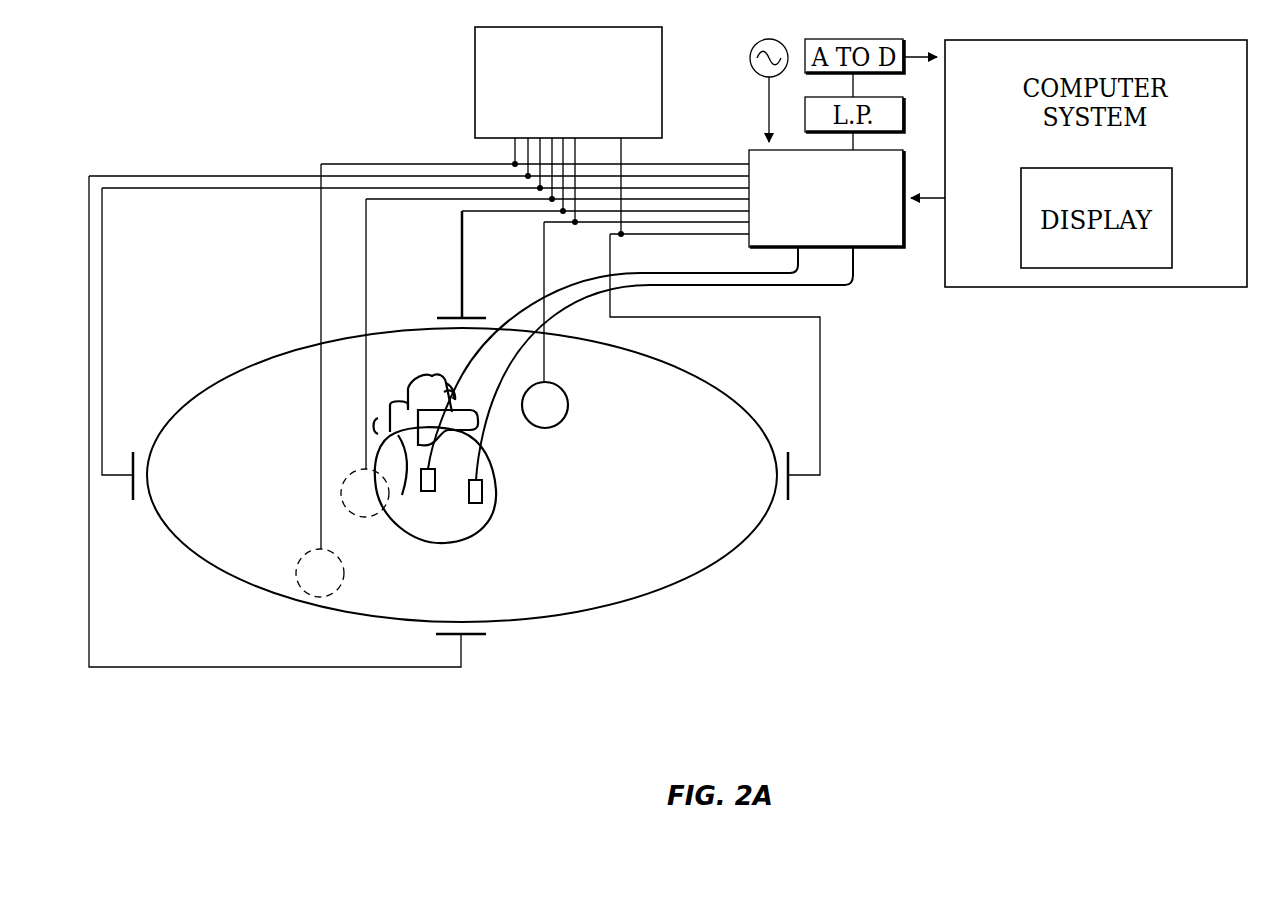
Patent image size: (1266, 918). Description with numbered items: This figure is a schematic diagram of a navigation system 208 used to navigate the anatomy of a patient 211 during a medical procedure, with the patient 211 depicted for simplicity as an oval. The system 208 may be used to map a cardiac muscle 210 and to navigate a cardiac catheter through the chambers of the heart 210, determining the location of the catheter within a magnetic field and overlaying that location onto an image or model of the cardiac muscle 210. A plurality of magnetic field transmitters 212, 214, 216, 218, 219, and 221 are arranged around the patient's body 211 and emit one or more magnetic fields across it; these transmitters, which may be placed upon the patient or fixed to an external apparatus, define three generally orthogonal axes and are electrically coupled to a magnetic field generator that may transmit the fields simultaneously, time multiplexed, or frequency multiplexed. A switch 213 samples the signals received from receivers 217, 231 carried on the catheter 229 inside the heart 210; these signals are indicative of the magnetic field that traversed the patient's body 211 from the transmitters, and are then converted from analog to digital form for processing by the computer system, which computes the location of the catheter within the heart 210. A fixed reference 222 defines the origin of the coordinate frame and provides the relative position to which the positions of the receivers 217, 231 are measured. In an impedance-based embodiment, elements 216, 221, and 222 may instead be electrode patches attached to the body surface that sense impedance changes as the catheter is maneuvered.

The navigation system 208 is at (352, 68).
The cardiac muscle 210 is at (490, 470).
The patient 211 is at (690, 372).
The magnetic field transmitter 212 is at (445, 315).
The switch 213 is at (873, 228).
The magnetic field transmitter 214 is at (475, 636).
The magnetic field transmitter 216 is at (548, 357).
The receiver 217 is at (482, 494).
The magnetic field transmitter 218 is at (133, 490).
The magnetic field transmitter 219 is at (790, 490).
The magnetic field transmitter 221 is at (320, 472).
The fixed reference 222 is at (366, 392).
The catheter 229 is at (520, 300).
The receiver 231 is at (428, 491).